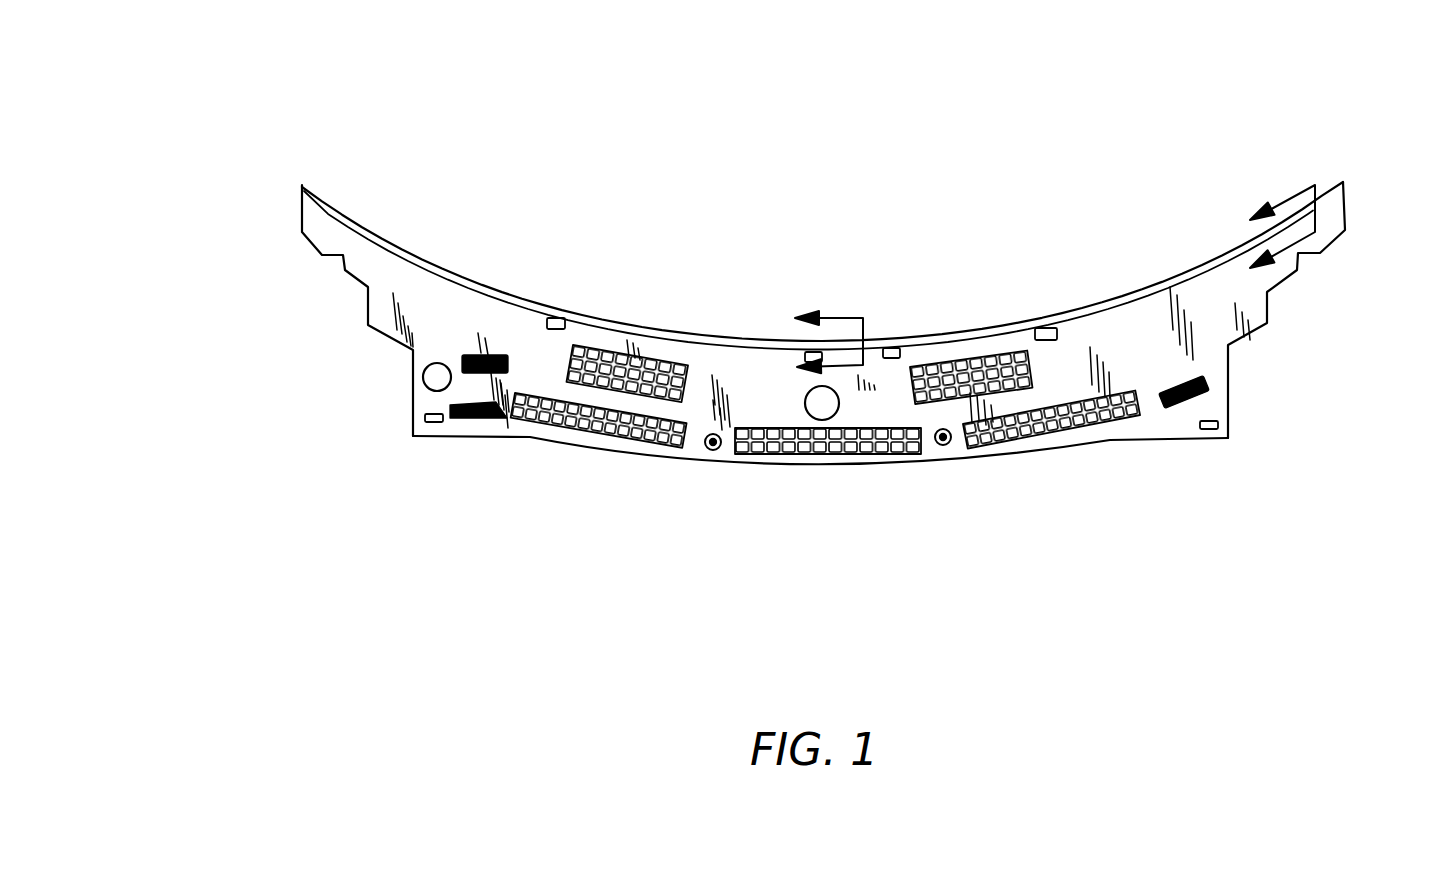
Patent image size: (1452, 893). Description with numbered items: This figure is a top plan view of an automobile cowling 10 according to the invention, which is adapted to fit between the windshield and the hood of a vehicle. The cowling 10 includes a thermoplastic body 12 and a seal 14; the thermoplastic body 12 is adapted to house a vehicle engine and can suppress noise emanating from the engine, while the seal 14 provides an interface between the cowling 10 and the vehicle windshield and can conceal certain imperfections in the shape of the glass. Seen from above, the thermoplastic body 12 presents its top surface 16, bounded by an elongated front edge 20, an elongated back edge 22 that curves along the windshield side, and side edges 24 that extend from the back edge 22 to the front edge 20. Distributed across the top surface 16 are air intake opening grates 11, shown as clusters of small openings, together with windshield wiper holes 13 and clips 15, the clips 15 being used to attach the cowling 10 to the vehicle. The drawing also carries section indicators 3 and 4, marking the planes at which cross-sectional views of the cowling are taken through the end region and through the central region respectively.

The cowling 10 is at (283, 203).
The air intake opening grates 11 is at (640, 378).
The thermoplastic body 12 is at (288, 275).
The windshield wiper holes 13 is at (437, 377).
The seal 14 is at (293, 182).
The clips 15 is at (565, 318).
The top surface 16 is at (455, 322).
The elongated front edge 20 is at (522, 440).
The elongated back edge 22 is at (432, 260).
The side edges 24 is at (298, 223).
The section line 3- 3 is at (1269, 241).
The section line 4- 4 is at (821, 345).